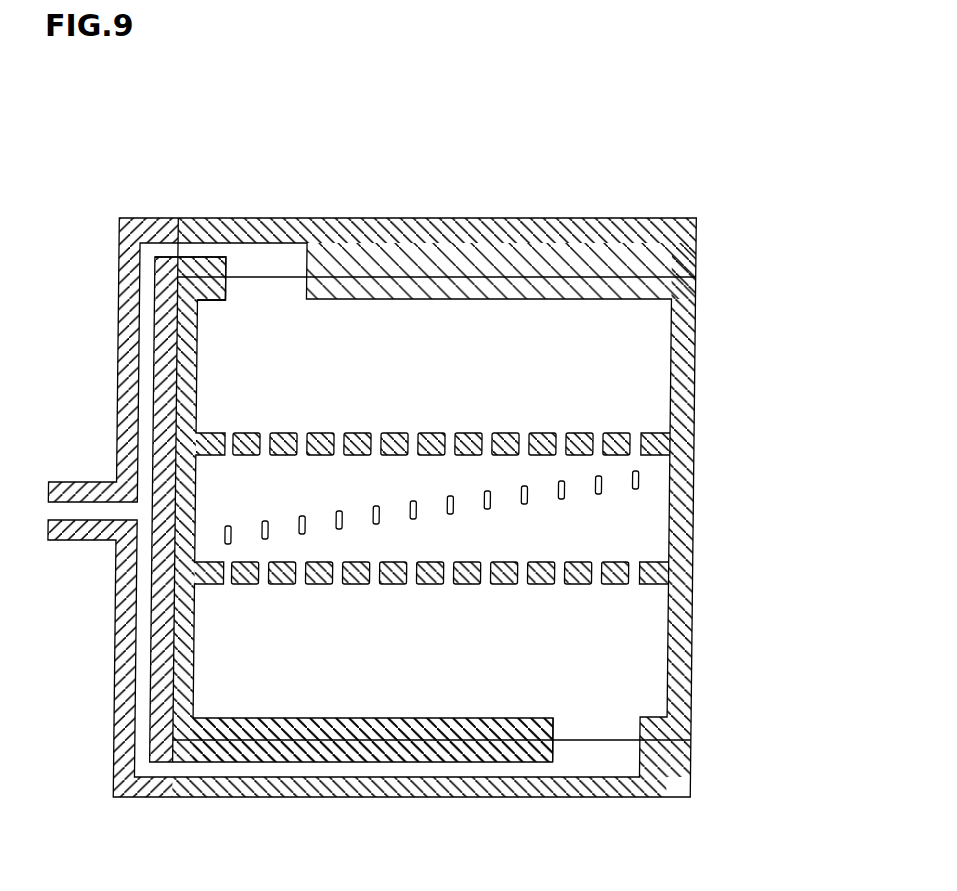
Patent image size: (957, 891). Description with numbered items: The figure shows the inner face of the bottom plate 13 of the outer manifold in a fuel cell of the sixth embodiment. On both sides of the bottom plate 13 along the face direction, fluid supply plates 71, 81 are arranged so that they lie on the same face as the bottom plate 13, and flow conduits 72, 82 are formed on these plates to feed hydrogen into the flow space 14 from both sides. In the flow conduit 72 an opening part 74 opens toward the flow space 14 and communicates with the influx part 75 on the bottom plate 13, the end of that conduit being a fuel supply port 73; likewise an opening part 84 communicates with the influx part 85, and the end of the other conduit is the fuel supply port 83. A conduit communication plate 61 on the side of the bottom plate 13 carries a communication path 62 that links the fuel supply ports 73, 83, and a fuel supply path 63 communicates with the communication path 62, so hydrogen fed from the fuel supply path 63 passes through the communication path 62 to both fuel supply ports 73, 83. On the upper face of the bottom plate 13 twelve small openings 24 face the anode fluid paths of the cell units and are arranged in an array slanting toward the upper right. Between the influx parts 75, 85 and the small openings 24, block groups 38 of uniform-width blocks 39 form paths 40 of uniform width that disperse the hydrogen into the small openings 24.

The bottom plate 13 is at (700, 468).
The flow space 14 is at (625, 340).
The small openings 24 is at (605, 495).
The block groups 38 is at (485, 413).
The blocks 39 is at (283, 432).
The paths 40 is at (408, 397).
The conduit communication plate 61 is at (178, 634).
The communication path 62 is at (141, 607).
The fuel supply path 63 is at (73, 507).
The fluid supply plate 71 is at (497, 218).
The flow conduit 72 is at (197, 247).
The fuel supply port 73 is at (170, 246).
The opening part 74 is at (308, 258).
The influx part 75 is at (204, 303).
The fluid supply plate 81 is at (385, 798).
The flow conduit 82 is at (288, 764).
The fuel supply port 83 is at (172, 764).
The opening part 84 is at (558, 758).
The influx part 85 is at (645, 722).